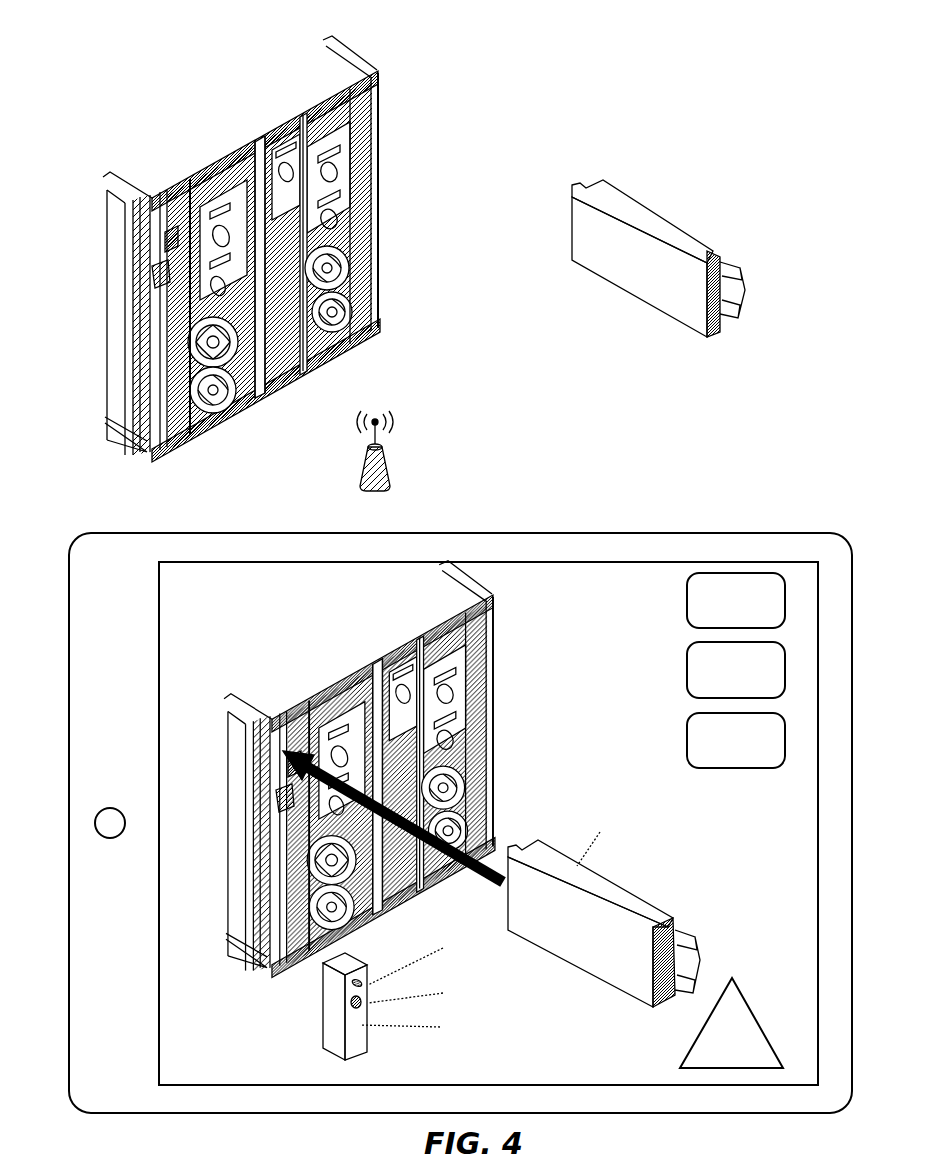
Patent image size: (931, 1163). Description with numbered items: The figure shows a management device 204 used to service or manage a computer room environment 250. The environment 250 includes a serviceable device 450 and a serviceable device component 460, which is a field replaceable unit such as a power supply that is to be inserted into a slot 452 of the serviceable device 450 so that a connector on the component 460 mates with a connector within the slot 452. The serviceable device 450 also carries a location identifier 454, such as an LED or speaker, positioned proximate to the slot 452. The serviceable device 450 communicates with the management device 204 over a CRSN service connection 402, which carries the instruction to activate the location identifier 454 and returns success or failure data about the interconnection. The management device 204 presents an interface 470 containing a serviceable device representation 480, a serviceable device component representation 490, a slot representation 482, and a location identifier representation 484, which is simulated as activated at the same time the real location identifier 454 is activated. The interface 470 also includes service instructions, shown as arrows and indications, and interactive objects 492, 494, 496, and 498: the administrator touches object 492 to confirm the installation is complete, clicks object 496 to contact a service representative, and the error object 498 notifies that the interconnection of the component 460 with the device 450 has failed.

The computer room environment 250 is at (104, 48).
The serviceable device 450 is at (404, 117).
The slot 452 is at (168, 238).
The location identifier 454 is at (157, 273).
The serviceable device component 460 is at (548, 225).
The CRSN service connection 402 is at (367, 473).
The management device 204 is at (68, 740).
The interface 470 is at (232, 602).
The serviceable device representation 480 is at (536, 618).
The slot representation 482 is at (282, 745).
The location identifier representation 484 is at (285, 800).
The serviceable device component representation 490 is at (684, 903).
The object 492 is at (687, 600).
The object 494 is at (687, 668).
The object 496 is at (687, 731).
The error object 498 is at (700, 1035).